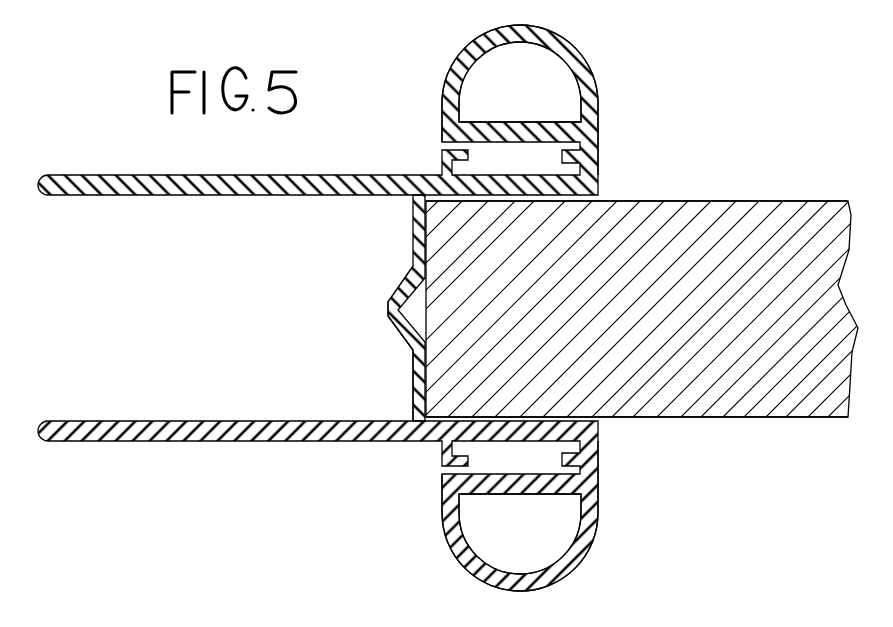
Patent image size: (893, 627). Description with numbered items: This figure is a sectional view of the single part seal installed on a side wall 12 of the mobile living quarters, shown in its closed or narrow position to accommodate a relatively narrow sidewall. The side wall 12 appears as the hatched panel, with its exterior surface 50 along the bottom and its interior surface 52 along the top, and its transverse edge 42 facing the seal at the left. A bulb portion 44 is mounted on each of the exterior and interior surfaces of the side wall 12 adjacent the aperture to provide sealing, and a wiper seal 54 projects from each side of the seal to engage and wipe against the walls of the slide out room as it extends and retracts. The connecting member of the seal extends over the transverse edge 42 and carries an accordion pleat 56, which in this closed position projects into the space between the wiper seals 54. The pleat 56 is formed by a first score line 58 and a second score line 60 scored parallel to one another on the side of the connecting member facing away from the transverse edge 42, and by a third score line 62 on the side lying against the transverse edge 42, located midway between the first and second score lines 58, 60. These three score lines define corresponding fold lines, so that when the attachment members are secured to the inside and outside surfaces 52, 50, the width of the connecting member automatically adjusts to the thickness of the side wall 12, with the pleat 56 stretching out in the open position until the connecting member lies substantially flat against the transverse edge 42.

The side wall 12 is at (780, 419).
The transverse edge 42 is at (395, 294).
The bulb portion 44 is at (456, 49).
The exterior surface 50 is at (710, 419).
The interior surface 52 is at (765, 201).
The wiper seal 54 is at (112, 196).
The accordion pleat 56 is at (376, 319).
The first score line 58 is at (412, 270).
The second score line 60 is at (407, 346).
The third score line 62 is at (408, 327).